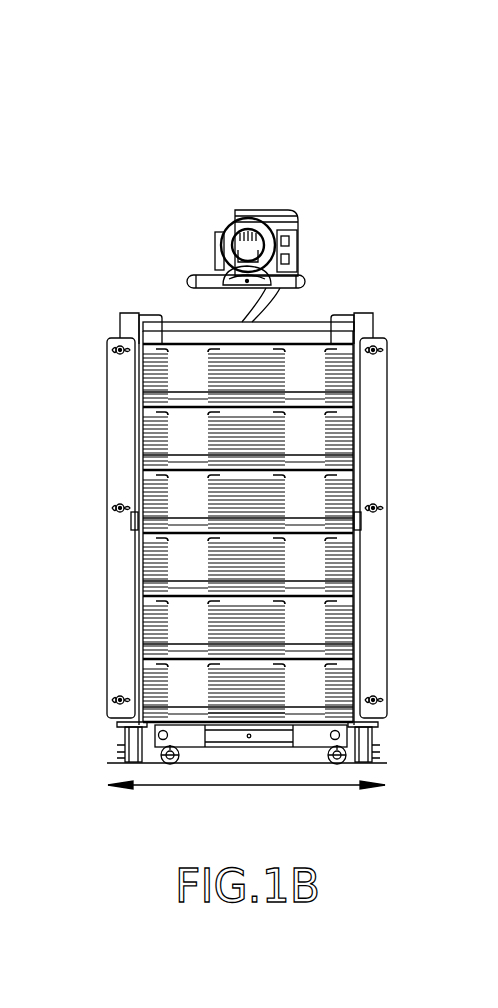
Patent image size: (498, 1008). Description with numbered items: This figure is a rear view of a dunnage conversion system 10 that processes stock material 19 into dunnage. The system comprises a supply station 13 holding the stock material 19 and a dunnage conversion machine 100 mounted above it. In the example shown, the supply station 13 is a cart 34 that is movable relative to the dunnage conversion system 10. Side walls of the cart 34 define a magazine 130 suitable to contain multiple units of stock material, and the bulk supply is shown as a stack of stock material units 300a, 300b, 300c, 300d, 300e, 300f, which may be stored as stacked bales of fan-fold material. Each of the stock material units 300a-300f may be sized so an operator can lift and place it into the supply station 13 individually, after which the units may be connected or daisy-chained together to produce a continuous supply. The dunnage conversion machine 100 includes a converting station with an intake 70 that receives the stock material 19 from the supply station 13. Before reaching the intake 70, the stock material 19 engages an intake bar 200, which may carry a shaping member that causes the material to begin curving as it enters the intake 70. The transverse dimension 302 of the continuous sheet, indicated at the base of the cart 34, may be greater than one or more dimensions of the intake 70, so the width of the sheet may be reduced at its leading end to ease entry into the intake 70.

The dunnage conversion system 10 is at (390, 182).
The dunnage conversion machine 100 is at (241, 213).
The intake 70 is at (250, 232).
The intake bar 200 is at (306, 285).
The magazine 130 is at (122, 318).
The stock material unit 300a is at (336, 397).
The stock material unit 300b is at (336, 443).
The stock material unit 300c is at (336, 500).
The stock material unit 300d is at (336, 573).
The stock material unit 300e is at (150, 618).
The stock material unit 300f is at (336, 705).
The supply station 13 is at (372, 641).
The stock material 19 is at (245, 688).
The cart 34 is at (374, 722).
The transverse dimension 302 is at (245, 786).